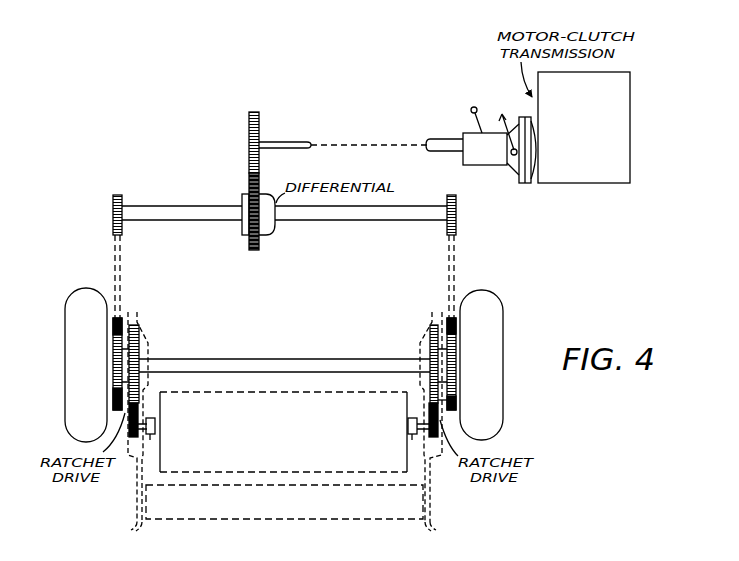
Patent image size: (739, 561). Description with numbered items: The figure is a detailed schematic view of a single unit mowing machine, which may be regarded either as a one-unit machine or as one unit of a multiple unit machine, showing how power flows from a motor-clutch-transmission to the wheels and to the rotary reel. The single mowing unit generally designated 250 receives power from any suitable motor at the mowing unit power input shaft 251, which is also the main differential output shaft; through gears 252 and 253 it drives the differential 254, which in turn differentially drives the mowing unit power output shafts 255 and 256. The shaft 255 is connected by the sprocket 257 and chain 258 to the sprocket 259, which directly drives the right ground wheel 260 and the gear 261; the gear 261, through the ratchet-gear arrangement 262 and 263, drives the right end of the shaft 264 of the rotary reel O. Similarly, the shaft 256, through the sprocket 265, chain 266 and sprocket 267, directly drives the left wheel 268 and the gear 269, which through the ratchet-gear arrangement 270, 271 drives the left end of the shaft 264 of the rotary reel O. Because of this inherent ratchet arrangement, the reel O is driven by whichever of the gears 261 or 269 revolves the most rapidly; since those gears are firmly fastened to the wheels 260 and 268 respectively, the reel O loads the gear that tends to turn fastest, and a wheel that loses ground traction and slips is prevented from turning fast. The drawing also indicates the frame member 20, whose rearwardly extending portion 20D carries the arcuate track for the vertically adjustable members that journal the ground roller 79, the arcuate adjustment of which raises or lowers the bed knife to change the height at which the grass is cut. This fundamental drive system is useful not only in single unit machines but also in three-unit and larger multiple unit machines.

The frame member 20 is at (140, 319).
The rearwardly extending portion 20D is at (135, 527).
The ground roller 79 is at (265, 519).
The rotary reel O is at (280, 473).
The mowing unit 250 is at (487, 300).
The power input shaft 251 is at (304, 140).
The gear 252 is at (255, 110).
The gear 253 is at (253, 251).
The differential 254 is at (268, 228).
The power output shaft 255 is at (354, 218).
The power output shaft 256 is at (199, 215).
The sprocket 257 is at (457, 206).
The chain 258 is at (457, 246).
The sprocket 259 is at (457, 339).
The right ground wheel 260 is at (500, 337).
The gear 261 is at (430, 334).
The ratchet-gear arrangement 262 is at (428, 406).
The ratchet-gear arrangement 263 is at (416, 426).
The shaft 264 is at (150, 440).
The sprocket 265 is at (118, 194).
The chain 266 is at (113, 241).
The sprocket 267 is at (113, 333).
The left wheel 268 is at (70, 306).
The gear 269 is at (140, 334).
The ratchet-gear arrangement 270 is at (138, 416).
The ratchet-gear arrangement 271 is at (150, 427).